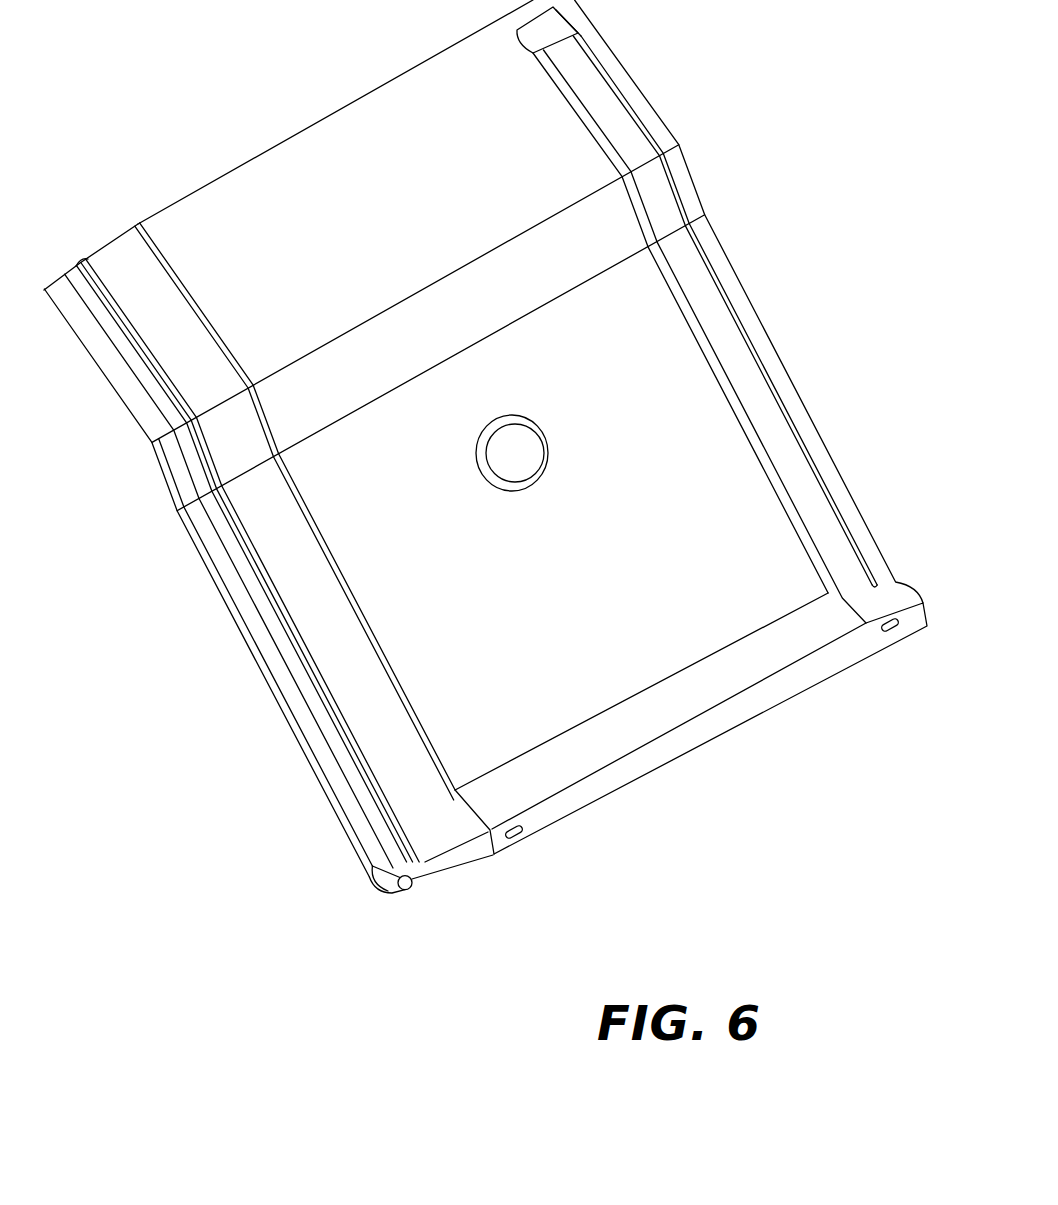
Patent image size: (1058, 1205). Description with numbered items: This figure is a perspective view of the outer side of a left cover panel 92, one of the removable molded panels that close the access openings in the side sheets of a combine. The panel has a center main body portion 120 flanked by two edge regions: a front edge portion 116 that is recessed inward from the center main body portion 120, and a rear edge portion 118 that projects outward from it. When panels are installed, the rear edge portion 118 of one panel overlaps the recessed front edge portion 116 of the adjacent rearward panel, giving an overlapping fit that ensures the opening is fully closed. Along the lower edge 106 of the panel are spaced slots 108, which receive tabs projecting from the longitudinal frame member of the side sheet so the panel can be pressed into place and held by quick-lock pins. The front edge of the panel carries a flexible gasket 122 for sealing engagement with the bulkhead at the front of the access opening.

The left cover panel 92 is at (398, 90).
The lower edge 106 is at (613, 790).
The slots 108 is at (515, 843).
The front edge portion 116 is at (125, 245).
The rear edge portion 118 is at (596, 68).
The center main body portion 120 is at (290, 150).
The flexible gasket 122 is at (353, 838).